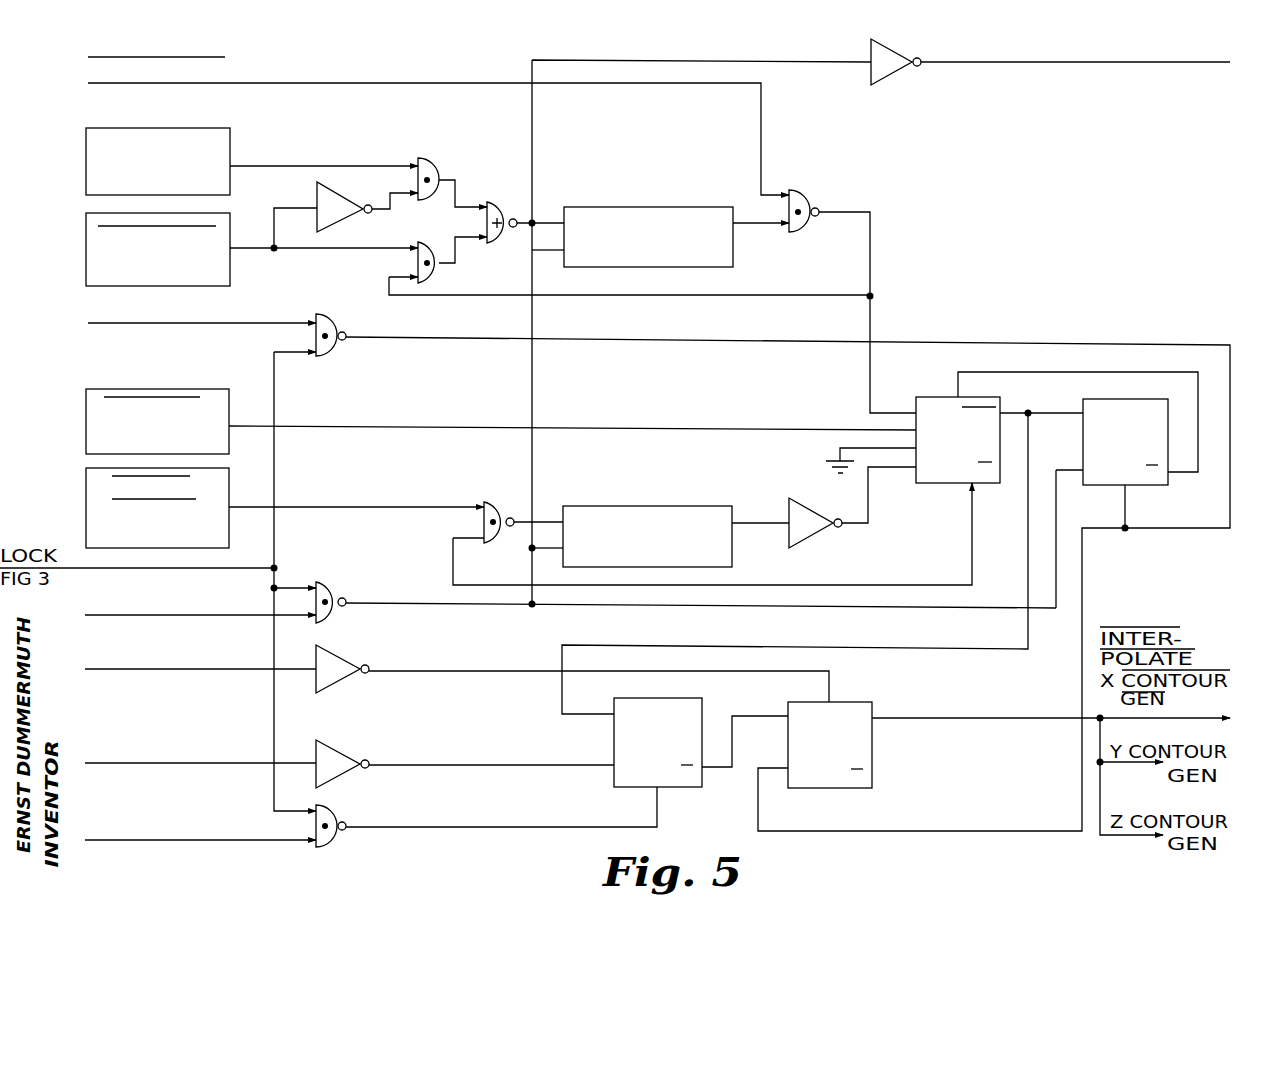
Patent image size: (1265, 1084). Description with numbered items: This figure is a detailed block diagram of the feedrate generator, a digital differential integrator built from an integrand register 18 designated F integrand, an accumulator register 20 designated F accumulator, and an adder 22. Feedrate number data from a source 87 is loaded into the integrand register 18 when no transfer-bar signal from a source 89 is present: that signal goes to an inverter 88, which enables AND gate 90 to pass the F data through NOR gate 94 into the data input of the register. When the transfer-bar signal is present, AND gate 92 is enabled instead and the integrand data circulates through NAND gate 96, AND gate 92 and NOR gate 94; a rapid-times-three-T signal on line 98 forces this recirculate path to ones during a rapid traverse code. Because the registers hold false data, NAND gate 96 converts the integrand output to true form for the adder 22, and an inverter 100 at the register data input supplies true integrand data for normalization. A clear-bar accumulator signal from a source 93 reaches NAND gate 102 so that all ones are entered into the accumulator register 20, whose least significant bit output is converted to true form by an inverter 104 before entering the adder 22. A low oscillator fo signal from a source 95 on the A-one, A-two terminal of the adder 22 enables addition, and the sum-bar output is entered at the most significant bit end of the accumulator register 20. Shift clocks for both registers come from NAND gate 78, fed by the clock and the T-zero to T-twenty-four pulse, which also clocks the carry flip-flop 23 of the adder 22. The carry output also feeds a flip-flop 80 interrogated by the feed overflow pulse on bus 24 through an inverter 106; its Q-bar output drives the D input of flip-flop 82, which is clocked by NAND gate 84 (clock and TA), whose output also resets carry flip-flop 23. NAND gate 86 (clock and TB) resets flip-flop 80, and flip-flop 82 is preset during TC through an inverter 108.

The line 98 is at (300, 83).
The source 87 is at (230, 138).
The source 89 is at (230, 222).
The inverter 88 is at (354, 178).
The AND gate 90 is at (432, 160).
The AND gate 92 is at (440, 230).
The NOR gate 94 is at (498, 202).
The integrand register 18 is at (735, 262).
The NAND gate 96 is at (800, 190).
The inverter 100 is at (890, 50).
The NAND gate 84 is at (336, 306).
The source 95 is at (229, 398).
The source 93 is at (229, 482).
The NAND gate 102 is at (507, 487).
The accumulator register 20 is at (734, 562).
The inverter 104 is at (800, 508).
The adder 22 is at (1003, 407).
The carry flip-flop 23 is at (1152, 487).
The NAND gate 78 is at (327, 582).
The inverter 108 is at (335, 650).
The inverter 106 is at (335, 745).
The bus 24 is at (217, 762).
The NAND gate 86 is at (327, 806).
The flip-flop 80 is at (702, 700).
The flip-flop 82 is at (872, 706).